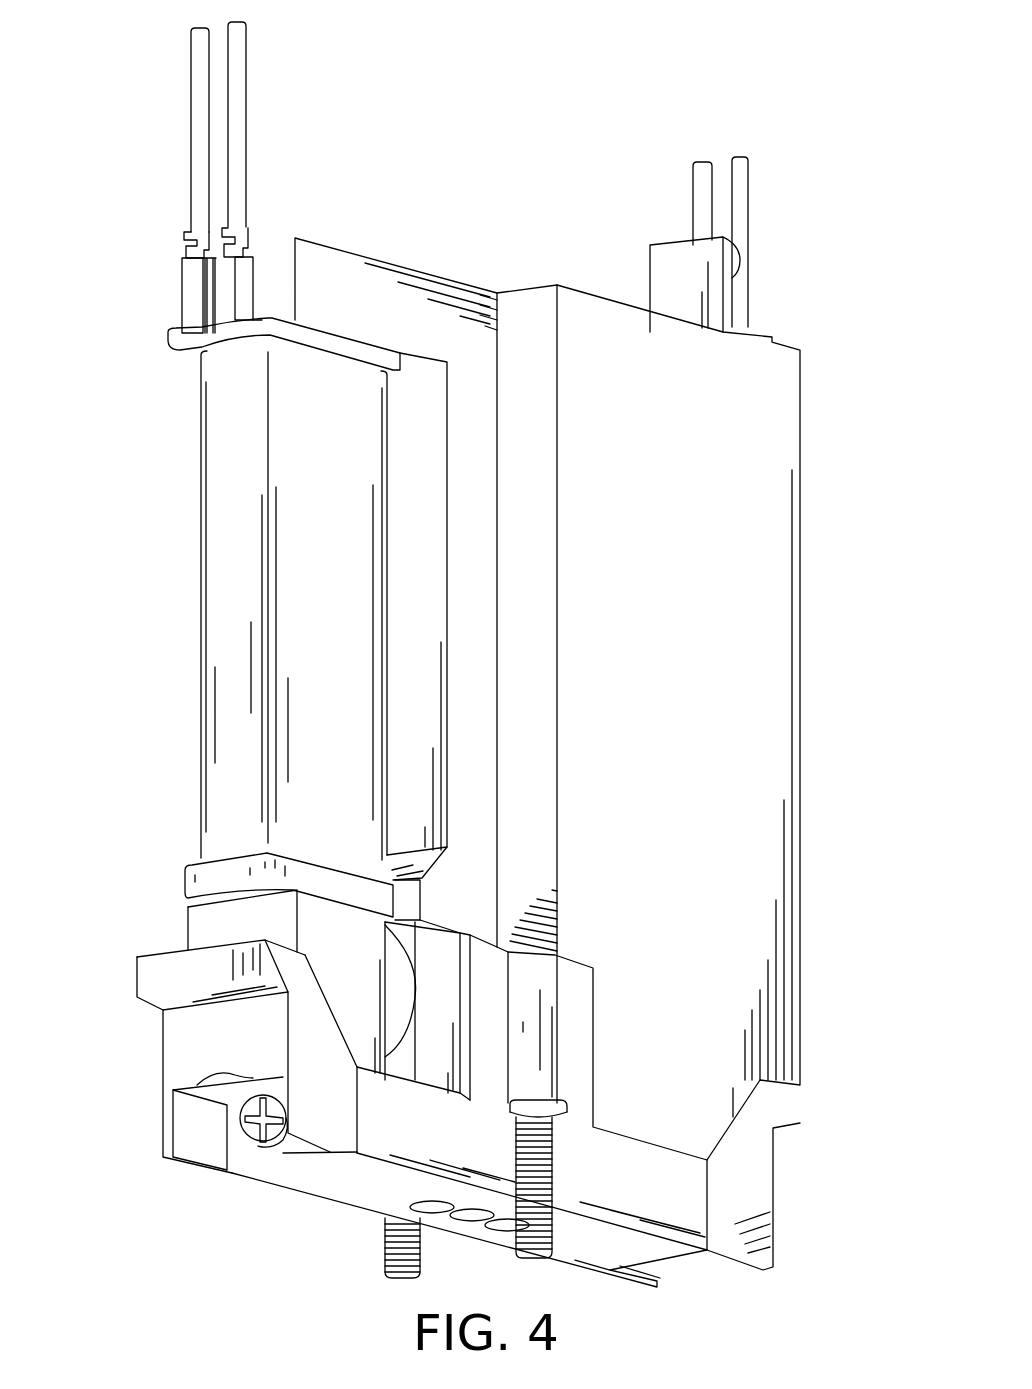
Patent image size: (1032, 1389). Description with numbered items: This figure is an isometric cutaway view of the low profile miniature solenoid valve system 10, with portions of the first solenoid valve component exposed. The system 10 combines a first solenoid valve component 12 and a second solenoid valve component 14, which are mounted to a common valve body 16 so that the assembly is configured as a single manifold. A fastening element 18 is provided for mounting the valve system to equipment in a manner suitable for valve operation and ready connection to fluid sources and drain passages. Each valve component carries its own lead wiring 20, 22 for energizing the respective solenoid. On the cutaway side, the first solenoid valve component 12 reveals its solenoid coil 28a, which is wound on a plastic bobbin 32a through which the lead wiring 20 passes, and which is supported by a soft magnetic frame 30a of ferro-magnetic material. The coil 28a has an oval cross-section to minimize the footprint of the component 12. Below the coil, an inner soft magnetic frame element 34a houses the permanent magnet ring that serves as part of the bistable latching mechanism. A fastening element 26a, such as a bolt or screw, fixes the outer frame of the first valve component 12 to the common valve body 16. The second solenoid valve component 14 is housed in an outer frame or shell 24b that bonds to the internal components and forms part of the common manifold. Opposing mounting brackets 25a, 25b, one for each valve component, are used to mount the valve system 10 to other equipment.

The low profile miniature solenoid valve system 10 is at (565, 134).
The first solenoid valve component 12 is at (157, 620).
The second solenoid valve component 14 is at (855, 868).
The common valve body 16 is at (580, 1232).
The fastening element 18 is at (533, 1255).
The lead wiring 20 is at (198, 54).
The lead wiring 22 is at (745, 170).
The outer frame or shell 24b is at (800, 493).
The mounting bracket 25a is at (160, 1047).
The mounting bracket 25b is at (773, 1220).
The fastening element 26a is at (227, 1135).
The solenoid coil 28a is at (214, 471).
The soft magnetic frame 30a is at (368, 283).
The plastic bobbin 32a is at (185, 303).
The inner soft magnetic frame element 34a is at (200, 925).